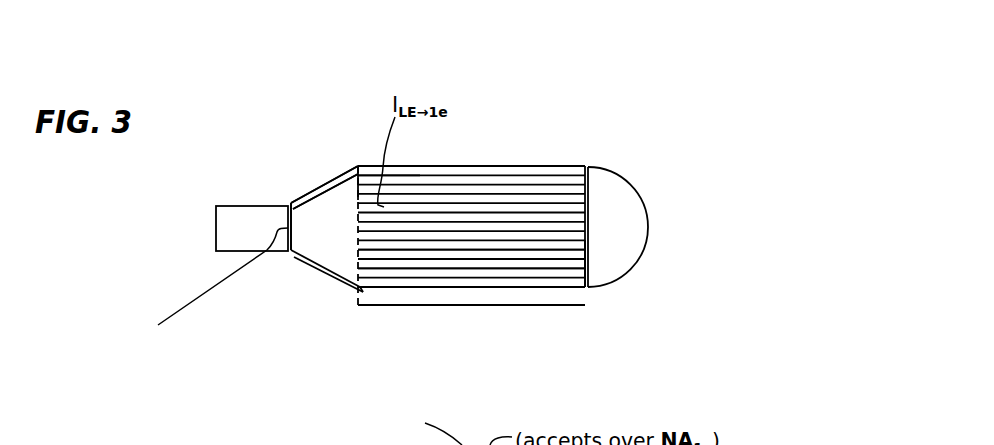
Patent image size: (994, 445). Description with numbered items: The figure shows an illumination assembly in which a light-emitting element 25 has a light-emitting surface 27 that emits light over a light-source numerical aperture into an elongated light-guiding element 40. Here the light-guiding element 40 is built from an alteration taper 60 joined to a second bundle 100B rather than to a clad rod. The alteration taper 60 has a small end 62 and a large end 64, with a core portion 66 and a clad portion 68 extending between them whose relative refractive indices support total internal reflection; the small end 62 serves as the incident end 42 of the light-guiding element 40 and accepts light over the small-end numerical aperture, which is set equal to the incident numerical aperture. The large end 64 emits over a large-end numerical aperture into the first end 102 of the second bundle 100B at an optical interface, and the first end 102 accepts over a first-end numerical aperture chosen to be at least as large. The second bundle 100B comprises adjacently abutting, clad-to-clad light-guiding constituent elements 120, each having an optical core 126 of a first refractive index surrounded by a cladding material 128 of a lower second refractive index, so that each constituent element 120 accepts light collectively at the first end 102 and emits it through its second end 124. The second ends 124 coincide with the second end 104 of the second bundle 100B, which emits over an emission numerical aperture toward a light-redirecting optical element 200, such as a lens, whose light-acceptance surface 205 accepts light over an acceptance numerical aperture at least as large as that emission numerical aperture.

The light-emitting element 25 is at (265, 240).
The light-emitting surface 27 is at (160, 295).
The light-guiding element 40 is at (572, 157).
The incident end 42 is at (182, 27).
The small end 62 is at (289, 202).
The alteration taper 60 is at (356, 291).
The large end 64 is at (363, 291).
The core portion 66 is at (335, 192).
The clad portion 68 is at (360, 177).
The first end 102 is at (372, 186).
The second end 104 is at (585, 260).
The light-guiding constituent element 120 is at (535, 247).
The second end 124 is at (362, 214).
The optical core 126 is at (442, 258).
The cladding material 128 is at (422, 265).
The second bundle 100B is at (483, 307).
The light-redirecting optical element 200 is at (636, 242).
The light-acceptance surface 205 is at (589, 184).